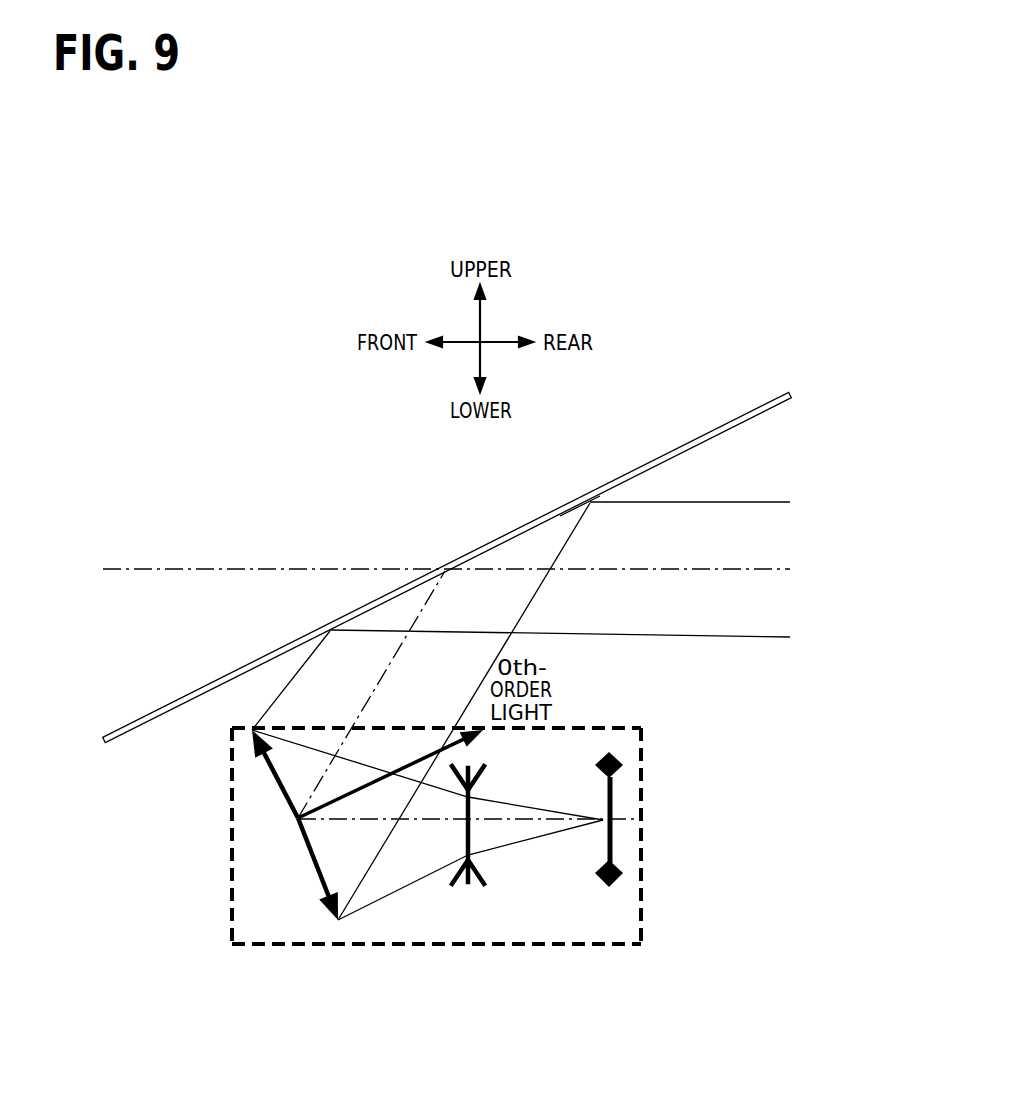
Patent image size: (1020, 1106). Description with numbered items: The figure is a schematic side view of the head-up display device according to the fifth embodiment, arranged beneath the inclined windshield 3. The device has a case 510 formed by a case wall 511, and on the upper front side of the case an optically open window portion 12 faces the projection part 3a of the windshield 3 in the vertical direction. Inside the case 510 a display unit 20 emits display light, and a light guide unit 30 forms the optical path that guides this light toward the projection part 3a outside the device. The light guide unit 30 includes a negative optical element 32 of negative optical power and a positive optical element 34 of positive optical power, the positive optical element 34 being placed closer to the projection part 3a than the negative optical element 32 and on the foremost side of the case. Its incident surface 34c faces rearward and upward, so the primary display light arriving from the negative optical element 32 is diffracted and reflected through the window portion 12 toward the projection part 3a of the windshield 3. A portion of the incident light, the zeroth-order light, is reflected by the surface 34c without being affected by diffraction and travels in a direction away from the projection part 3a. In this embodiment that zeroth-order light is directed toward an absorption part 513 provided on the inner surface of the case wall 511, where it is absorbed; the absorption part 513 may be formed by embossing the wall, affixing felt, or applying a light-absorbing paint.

The windshield 3 is at (689, 444).
The projection part 3a is at (558, 522).
The window portion 12 is at (243, 728).
The display unit 20 is at (612, 790).
The light guide unit 30 is at (317, 870).
The negative optical element 32 is at (477, 880).
The positive optical element 34 is at (247, 870).
The surface 34c is at (340, 874).
The case 510 is at (483, 852).
The case wall 511 is at (567, 940).
The absorption part 513 is at (500, 735).